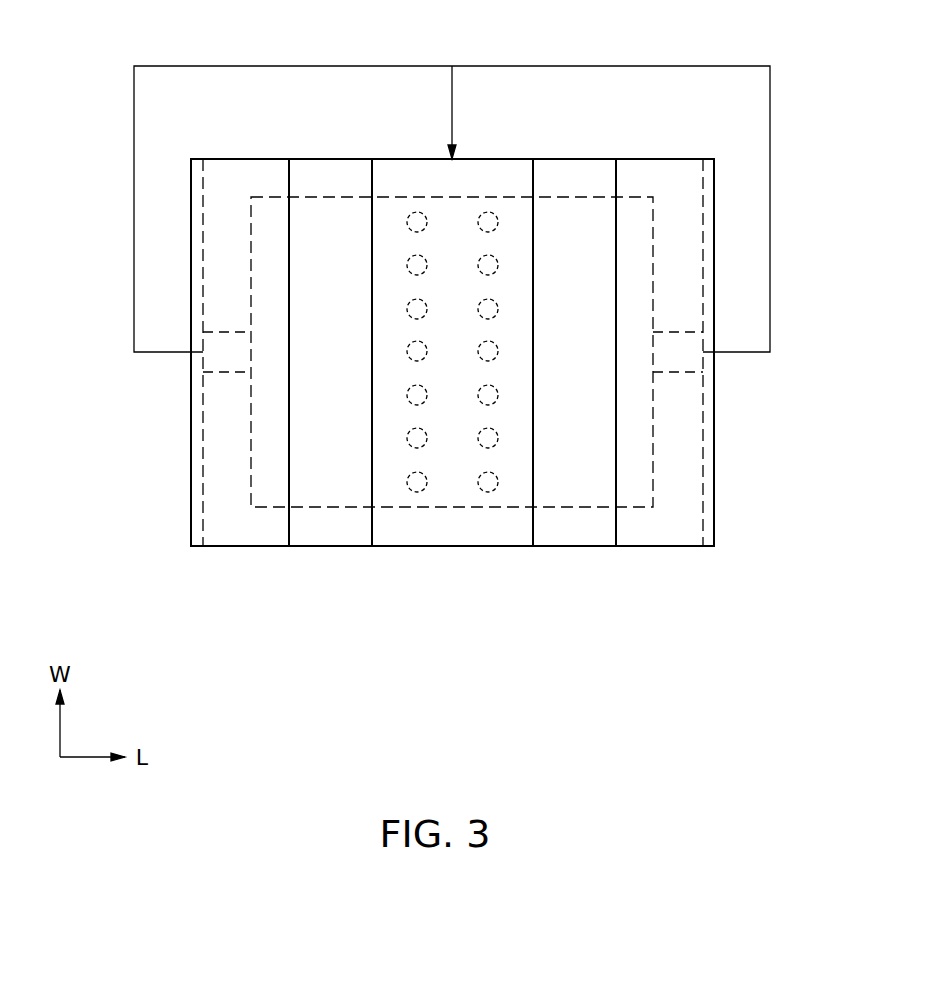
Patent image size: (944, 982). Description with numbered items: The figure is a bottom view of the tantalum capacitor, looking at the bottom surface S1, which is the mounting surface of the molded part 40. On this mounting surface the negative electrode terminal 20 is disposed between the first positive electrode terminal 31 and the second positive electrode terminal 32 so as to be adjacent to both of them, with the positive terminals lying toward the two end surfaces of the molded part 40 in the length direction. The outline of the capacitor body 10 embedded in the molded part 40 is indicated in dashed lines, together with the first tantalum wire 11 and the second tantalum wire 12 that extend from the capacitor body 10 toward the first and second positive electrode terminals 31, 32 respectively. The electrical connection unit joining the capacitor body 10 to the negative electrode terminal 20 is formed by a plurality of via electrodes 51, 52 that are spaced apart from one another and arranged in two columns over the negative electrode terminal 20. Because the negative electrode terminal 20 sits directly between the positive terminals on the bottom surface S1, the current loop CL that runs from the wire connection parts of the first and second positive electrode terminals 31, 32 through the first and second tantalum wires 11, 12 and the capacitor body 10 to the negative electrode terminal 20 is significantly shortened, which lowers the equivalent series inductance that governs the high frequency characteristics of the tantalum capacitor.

The capacitor body 10 is at (333, 500).
The first tantalum wire 11 is at (675, 362).
The second tantalum wire 12 is at (228, 360).
The negative electrode terminal 20 is at (460, 547).
The first positive electrode terminal 31 is at (677, 543).
The second positive electrode terminal 32 is at (219, 541).
The molded part 40 is at (575, 537).
The via electrode 51 is at (488, 215).
The via electrode 52 is at (417, 212).
The bottom surface S1 is at (331, 212).
The current loop CL is at (452, 195).